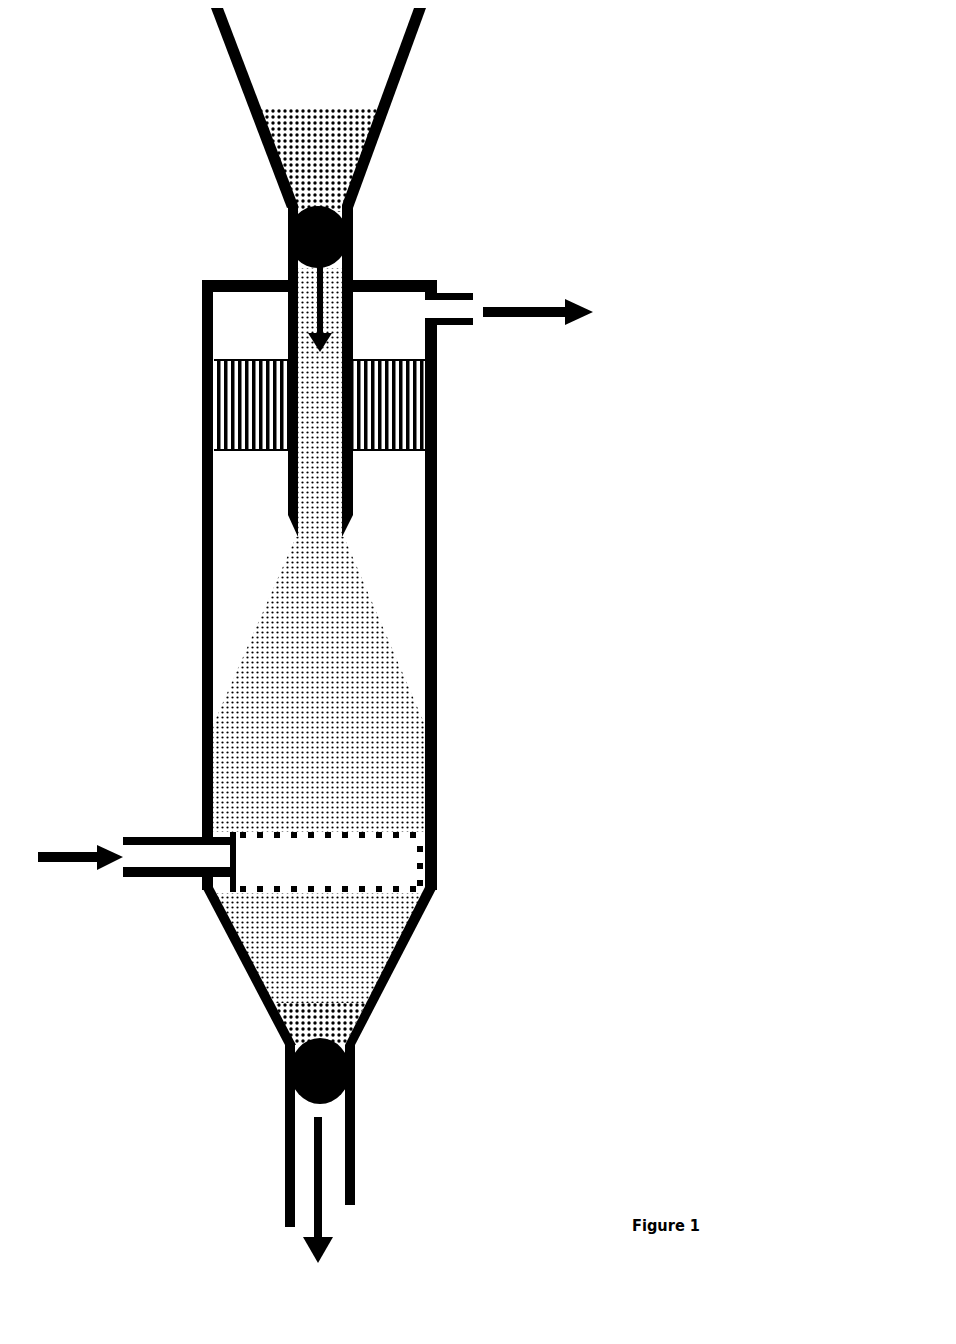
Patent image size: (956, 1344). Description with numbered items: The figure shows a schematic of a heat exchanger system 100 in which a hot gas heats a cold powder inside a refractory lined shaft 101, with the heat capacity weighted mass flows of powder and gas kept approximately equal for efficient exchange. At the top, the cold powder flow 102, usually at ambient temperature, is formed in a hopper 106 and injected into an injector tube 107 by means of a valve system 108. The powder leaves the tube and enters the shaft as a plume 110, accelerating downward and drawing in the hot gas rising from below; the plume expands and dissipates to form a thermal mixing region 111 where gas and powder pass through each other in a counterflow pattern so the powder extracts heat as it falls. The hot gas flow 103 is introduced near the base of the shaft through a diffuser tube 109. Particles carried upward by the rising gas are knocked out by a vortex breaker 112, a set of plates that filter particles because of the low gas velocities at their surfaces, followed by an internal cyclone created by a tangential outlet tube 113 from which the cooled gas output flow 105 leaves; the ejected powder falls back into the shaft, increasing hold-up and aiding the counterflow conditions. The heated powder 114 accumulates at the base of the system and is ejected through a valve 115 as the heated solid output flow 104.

The heat exchanger system 100 is at (454, 597).
The refractory lined shaft 101 is at (442, 705).
The cold powder flow 102 is at (338, 302).
The hot gas flow 103 is at (135, 837).
The heated solid output flow 104 is at (383, 1154).
The cooled gas output flow 105 is at (565, 299).
The hopper 106 is at (313, 110).
The injector tube 107 is at (413, 447).
The valve system 108 is at (239, 237).
The diffuser tube 109 is at (415, 862).
The plume 110 is at (262, 639).
The thermal mixing region 111 is at (242, 769).
The vortex breaker 112 is at (260, 405).
The tangential outlet tube 113 is at (457, 280).
The heated powder 114 is at (360, 1022).
The valve 115 is at (226, 1071).